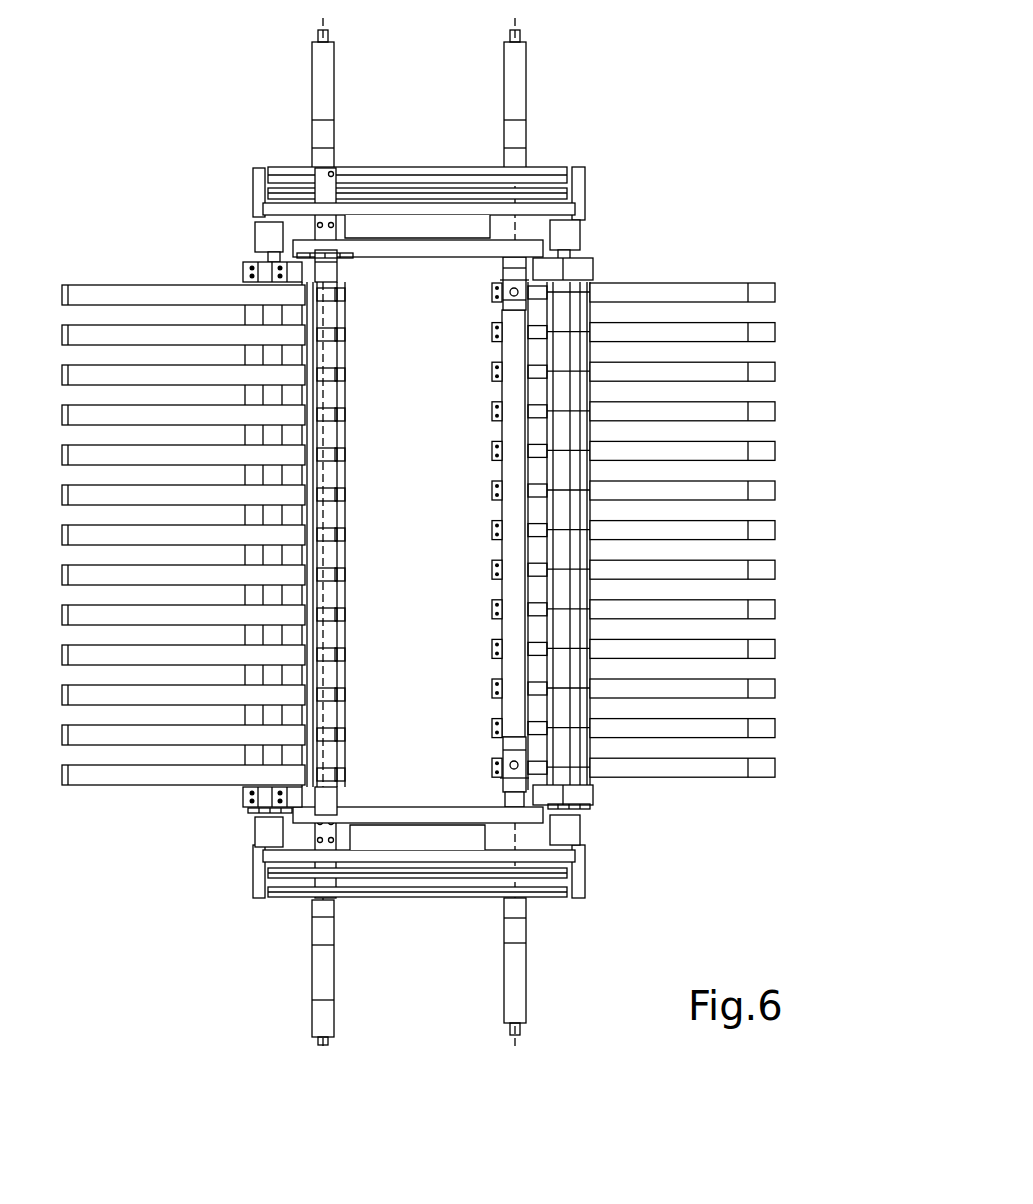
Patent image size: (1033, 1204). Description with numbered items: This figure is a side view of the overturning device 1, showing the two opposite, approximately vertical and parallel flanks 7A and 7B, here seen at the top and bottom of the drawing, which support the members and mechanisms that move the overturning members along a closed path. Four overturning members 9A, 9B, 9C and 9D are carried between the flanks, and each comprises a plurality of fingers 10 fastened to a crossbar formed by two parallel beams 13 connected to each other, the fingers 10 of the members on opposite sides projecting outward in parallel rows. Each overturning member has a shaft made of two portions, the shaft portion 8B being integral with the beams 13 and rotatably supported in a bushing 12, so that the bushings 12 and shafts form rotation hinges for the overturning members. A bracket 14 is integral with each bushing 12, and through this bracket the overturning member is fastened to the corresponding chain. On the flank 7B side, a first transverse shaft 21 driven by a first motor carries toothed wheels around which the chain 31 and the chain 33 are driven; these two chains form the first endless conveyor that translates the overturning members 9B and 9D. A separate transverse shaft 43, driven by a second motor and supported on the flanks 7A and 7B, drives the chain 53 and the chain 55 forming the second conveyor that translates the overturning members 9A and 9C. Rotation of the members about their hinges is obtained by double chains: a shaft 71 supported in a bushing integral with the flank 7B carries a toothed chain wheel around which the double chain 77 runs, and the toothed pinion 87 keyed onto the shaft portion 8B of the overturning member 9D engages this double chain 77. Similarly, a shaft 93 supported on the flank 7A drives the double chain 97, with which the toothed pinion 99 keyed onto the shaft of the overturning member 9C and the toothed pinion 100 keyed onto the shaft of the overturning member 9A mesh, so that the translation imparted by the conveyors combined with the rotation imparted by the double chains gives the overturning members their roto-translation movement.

The device 1 is at (674, 167).
The flank 7A is at (563, 857).
The flank 7B is at (418, 215).
The shaft portion 8B is at (272, 257).
The overturning member 9A is at (575, 276).
The overturning member 9B is at (703, 272).
The overturning member 9C is at (242, 798).
The overturning member 9D is at (150, 277).
The fingers 10 is at (122, 735).
The bushing 12 is at (310, 230).
The beams 13 is at (560, 630).
The bracket 14 is at (258, 185).
The first transverse shaft 21 is at (316, 97).
The chain 31 is at (432, 897).
The chain 33 is at (455, 167).
The transverse shaft 43 is at (505, 353).
The chain 53 is at (468, 878).
The chain 55 is at (500, 190).
The shaft 71 is at (504, 61).
The double chain 77 is at (462, 250).
The toothed pinion 87 is at (345, 263).
The shaft 93 is at (312, 985).
The double chain 97 is at (440, 812).
The toothed pinion 99 is at (250, 813).
The toothed pinion 100 is at (590, 808).